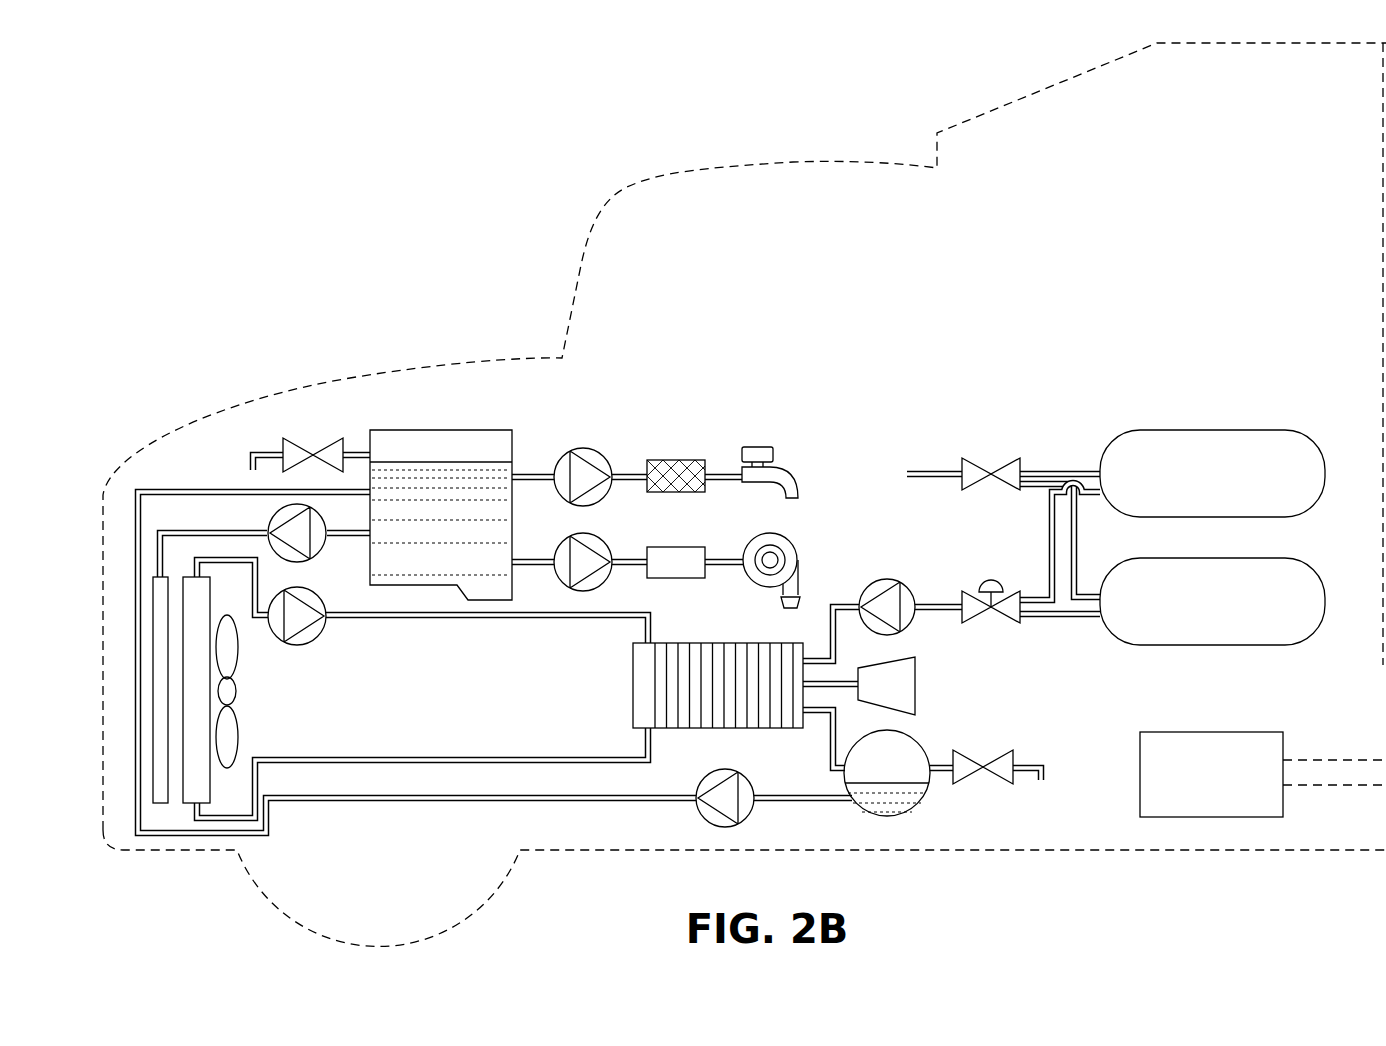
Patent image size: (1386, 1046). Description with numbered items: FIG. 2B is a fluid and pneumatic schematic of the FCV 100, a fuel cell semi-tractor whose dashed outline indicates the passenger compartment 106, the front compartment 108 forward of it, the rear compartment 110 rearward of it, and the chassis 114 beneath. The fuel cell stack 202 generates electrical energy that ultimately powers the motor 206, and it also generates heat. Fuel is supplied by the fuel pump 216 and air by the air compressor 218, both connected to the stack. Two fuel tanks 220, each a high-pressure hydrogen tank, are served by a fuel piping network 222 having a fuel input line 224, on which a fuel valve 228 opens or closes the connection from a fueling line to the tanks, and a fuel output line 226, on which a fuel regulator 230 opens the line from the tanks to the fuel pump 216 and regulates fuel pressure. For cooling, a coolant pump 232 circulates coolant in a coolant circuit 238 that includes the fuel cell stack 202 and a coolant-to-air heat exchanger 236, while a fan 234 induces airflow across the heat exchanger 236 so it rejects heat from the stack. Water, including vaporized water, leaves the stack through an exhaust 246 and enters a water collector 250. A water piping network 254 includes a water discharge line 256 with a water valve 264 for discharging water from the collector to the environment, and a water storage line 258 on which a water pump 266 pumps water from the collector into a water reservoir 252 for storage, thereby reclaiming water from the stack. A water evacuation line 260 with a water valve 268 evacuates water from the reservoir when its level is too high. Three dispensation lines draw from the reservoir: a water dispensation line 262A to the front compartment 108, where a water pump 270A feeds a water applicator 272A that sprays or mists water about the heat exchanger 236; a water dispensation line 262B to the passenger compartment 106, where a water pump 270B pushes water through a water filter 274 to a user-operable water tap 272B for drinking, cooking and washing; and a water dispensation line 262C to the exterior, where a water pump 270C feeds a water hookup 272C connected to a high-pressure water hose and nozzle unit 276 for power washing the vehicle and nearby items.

The FCV 100 is at (577, 279).
The passenger compartment 106 is at (647, 225).
The front compartment 108 is at (495, 380).
The rear compartment 110 is at (1013, 155).
The chassis 114 is at (550, 710).
The fuel cell stack 202 is at (743, 643).
The motor 206 is at (1200, 732).
The fuel pump 216 is at (905, 630).
The air compressor 218 is at (915, 687).
The fuel tanks 220 is at (1293, 430).
The fuel piping network 222 is at (1092, 555).
The fuel input line 224 is at (1063, 450).
The fuel output line 226 is at (1062, 628).
The fuel valve 228 is at (977, 460).
The fuel regulator 230 is at (982, 620).
The coolant pump 232 is at (318, 640).
The fan 234 is at (230, 688).
The coolant-to-air heat exchanger 236 is at (212, 730).
The coolant circuit 238 is at (290, 745).
The exhaust 246 is at (830, 745).
The water collector 250 is at (920, 740).
The water reservoir 252 is at (433, 430).
The water piping network 254 is at (517, 820).
The water discharge line 256 is at (1045, 752).
The water storage line 258 is at (623, 820).
The water evacuation line 260 is at (260, 438).
The water dispensation line 262A is at (153, 523).
The water dispensation line 262B is at (803, 458).
The water dispensation line 262C is at (805, 545).
The water valve 264 is at (983, 752).
The water pump 266 is at (741, 822).
The water valve 268 is at (338, 437).
The water pump 270A is at (277, 520).
The water pump 270B is at (590, 450).
The water pump 270C is at (590, 536).
The water applicator 272A is at (152, 627).
The water tap 272B is at (762, 447).
The water hookup 272C is at (667, 547).
The water filter 274 is at (667, 460).
The high-pressure water hose and nozzle unit 276 is at (760, 535).